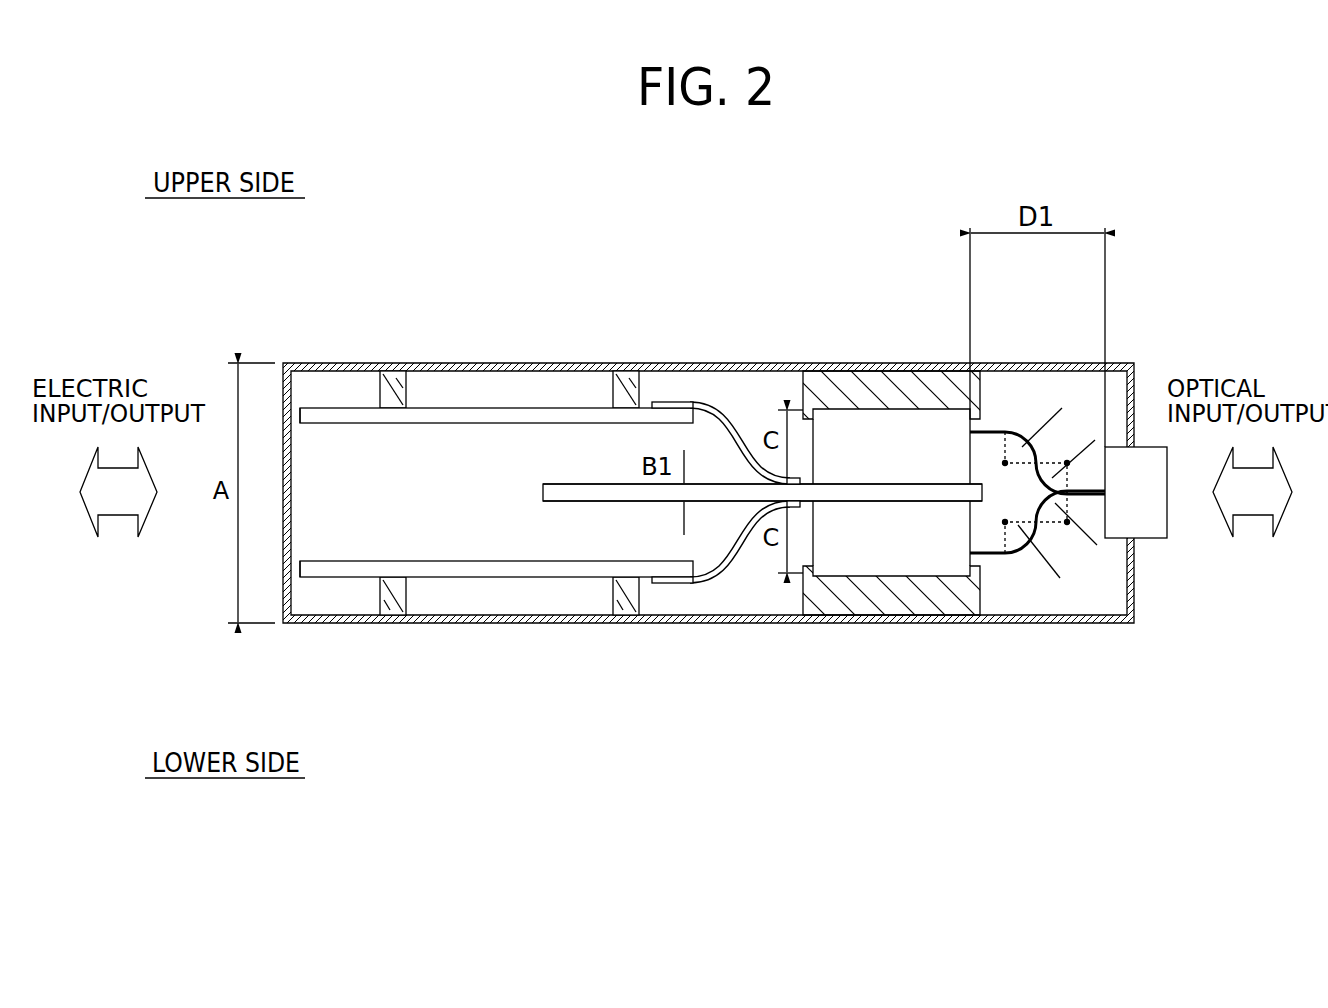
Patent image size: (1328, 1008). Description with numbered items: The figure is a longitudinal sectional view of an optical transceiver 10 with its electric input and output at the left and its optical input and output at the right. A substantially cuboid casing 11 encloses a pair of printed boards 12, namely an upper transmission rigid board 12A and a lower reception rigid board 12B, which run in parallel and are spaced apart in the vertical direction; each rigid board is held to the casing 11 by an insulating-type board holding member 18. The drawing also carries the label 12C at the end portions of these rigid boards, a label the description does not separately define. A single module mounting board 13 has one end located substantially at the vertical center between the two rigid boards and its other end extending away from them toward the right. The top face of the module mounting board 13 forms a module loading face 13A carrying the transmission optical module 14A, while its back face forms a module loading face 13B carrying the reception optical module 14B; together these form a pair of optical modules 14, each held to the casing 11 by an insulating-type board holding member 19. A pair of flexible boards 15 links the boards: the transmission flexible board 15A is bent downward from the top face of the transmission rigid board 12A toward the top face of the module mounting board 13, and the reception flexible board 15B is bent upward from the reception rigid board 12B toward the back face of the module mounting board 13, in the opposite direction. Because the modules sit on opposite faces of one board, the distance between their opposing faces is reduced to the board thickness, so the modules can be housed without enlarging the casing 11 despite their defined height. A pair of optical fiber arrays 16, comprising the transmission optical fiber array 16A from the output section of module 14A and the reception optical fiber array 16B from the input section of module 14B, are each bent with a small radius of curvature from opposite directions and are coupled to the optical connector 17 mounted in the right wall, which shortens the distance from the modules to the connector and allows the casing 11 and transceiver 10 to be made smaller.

The optical transceiver 10 is at (1131, 242).
The casing 11 is at (577, 363).
The printed boards 12 is at (517, 408).
The transmission rigid board 12A is at (455, 410).
The reception rigid board 12B is at (435, 570).
The electrode end portion 12C is at (351, 402).
The module mounting board 13 is at (578, 501).
The module loading face 13A is at (837, 480).
The module loading face 13B is at (832, 503).
The optical modules 14 is at (922, 388).
The transmission optical module 14A is at (893, 428).
The reception optical module 14B is at (878, 560).
The flexible boards 15 is at (686, 402).
The transmission flexible board 15A is at (723, 428).
The reception flexible board 15B is at (712, 578).
The optical fiber arrays 16 is at (995, 428).
The transmission optical fiber array 16A is at (1003, 428).
The reception optical fiber array 16B is at (993, 557).
The optical connector 17 is at (1150, 522).
The board holding member 18 is at (396, 375).
The board holding member 19 is at (810, 372).